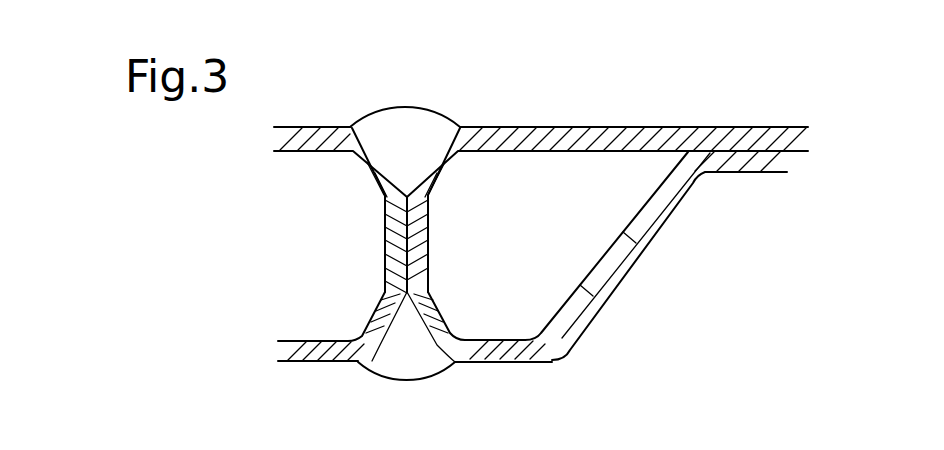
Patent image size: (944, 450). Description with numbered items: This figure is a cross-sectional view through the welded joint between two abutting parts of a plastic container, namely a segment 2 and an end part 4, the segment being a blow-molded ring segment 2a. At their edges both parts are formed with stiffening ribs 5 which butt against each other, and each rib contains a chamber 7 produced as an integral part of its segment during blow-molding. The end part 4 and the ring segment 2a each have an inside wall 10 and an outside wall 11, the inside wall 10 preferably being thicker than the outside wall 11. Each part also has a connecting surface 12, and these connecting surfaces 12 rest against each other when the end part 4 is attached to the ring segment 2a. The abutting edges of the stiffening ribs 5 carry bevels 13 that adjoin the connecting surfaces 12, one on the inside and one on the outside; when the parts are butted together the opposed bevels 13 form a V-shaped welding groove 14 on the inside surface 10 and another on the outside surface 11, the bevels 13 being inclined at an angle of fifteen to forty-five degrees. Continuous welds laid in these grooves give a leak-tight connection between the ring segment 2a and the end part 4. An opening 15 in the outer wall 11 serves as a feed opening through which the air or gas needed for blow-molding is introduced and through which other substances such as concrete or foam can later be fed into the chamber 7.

The segment 2 is at (688, 127).
The ring segment 2a is at (785, 130).
The end part 4 is at (291, 128).
The stiffening ribs 5 is at (297, 352).
The chambers 7 is at (360, 223).
The inside wall 10 is at (607, 132).
The outside wall 11 is at (752, 167).
The connecting surface 12 is at (407, 196).
The bevels 13 is at (380, 158).
The welding groove 14 is at (427, 347).
The opening 15 is at (625, 257).